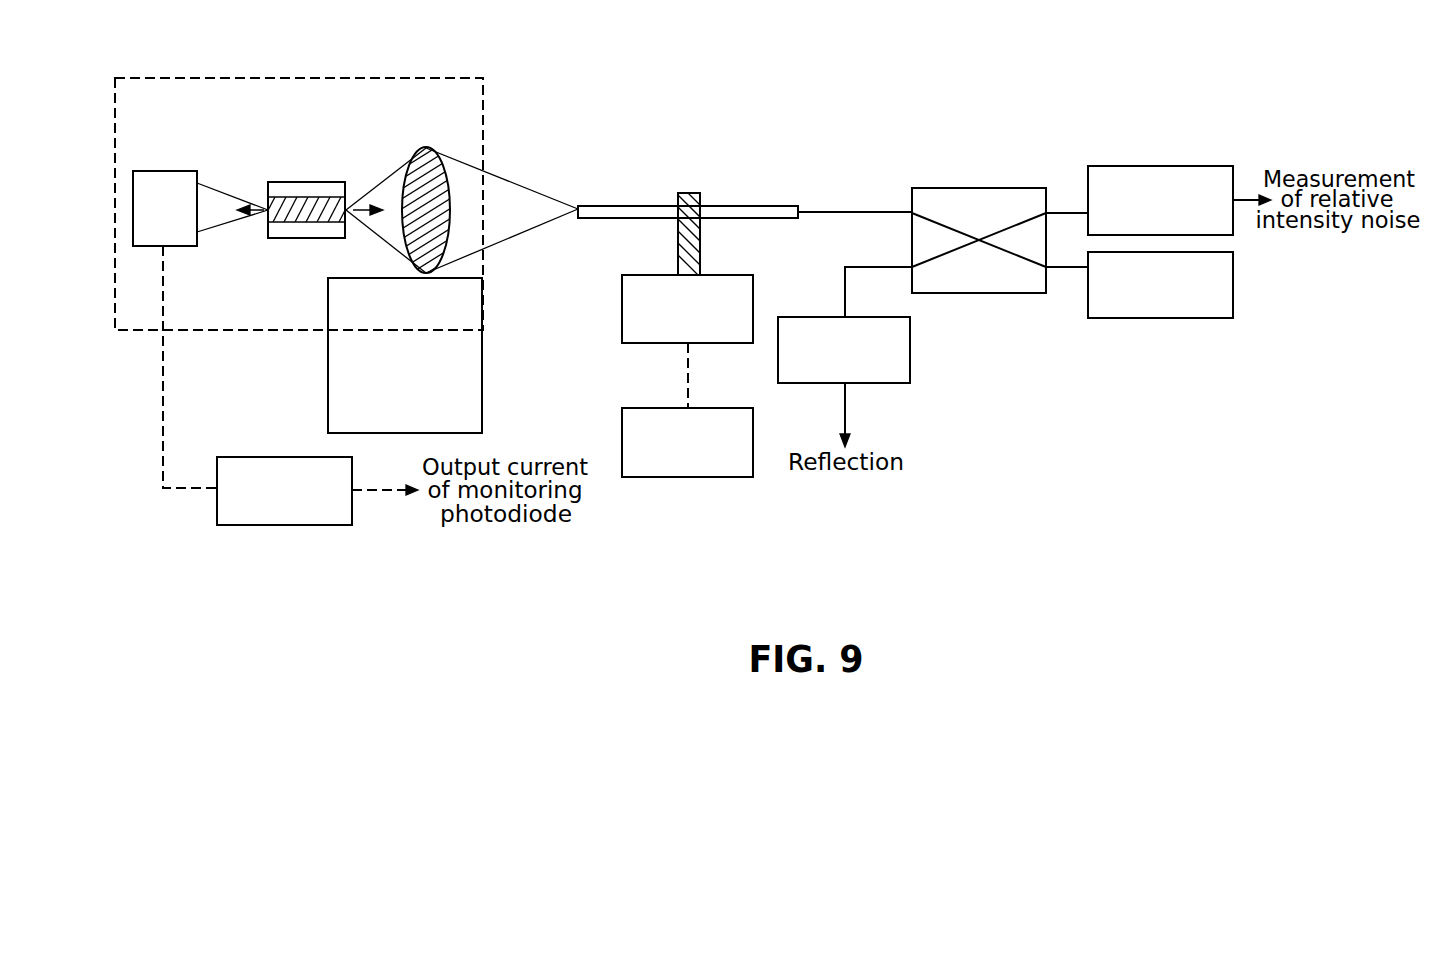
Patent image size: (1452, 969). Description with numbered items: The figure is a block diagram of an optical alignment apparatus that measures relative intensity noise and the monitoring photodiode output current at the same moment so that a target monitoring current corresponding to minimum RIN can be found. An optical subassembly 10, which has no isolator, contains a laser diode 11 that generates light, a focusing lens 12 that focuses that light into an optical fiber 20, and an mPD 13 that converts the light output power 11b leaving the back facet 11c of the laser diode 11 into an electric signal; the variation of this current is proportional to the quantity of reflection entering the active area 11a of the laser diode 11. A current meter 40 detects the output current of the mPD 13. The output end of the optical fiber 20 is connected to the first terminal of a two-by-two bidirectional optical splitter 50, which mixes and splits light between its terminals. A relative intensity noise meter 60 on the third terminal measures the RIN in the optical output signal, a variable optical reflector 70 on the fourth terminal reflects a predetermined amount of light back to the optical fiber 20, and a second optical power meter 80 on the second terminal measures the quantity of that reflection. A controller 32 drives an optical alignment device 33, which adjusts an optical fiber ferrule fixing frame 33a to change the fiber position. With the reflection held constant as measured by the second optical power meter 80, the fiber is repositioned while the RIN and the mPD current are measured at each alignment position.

The optical subassembly 10 is at (215, 78).
The laser diode 11 is at (303, 162).
The active area 11a is at (310, 217).
The light output power 11b is at (358, 213).
The back facet 11c is at (247, 217).
The focusing lens 12 is at (425, 165).
The mPD 13 is at (162, 180).
The optical fiber 20 is at (615, 206).
The controller 32 is at (713, 468).
The optical alignment device 33 is at (755, 300).
The optical fiber ferrule fixing frame 33a is at (695, 245).
The current meter 40 is at (265, 458).
The bidirectional optical splitter 50 is at (968, 198).
The relative intensity noise meter 60 is at (1112, 166).
The variable optical reflector 70 is at (1122, 318).
The second optical power meter 80 is at (908, 370).